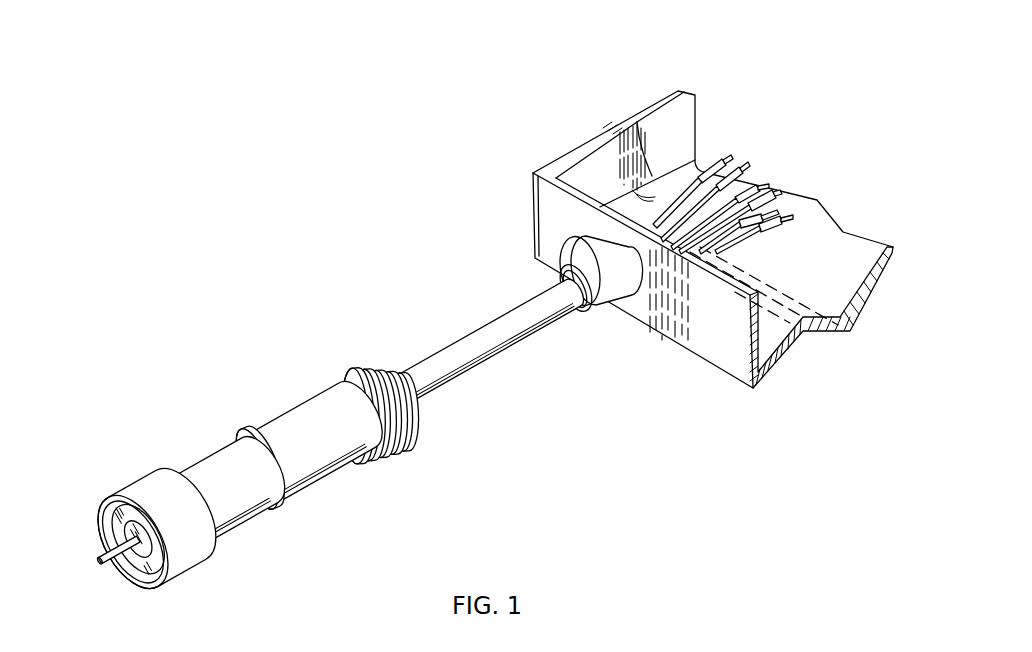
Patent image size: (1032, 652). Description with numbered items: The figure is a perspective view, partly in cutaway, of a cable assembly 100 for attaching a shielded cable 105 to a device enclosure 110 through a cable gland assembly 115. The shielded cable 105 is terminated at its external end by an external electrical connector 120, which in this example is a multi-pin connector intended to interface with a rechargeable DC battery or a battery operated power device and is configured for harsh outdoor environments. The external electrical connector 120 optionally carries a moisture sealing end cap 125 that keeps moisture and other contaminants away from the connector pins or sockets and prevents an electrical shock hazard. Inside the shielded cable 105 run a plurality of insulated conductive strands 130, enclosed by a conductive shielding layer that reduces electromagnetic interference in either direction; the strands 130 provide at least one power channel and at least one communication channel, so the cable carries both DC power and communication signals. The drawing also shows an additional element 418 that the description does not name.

The cable assembly 100 is at (477, 324).
The shielded cable 105 is at (463, 333).
The device enclosure 110 is at (533, 186).
The cable gland assembly 115 is at (562, 272).
The external electrical connector 120 is at (292, 407).
The moisture sealing end cap 125 is at (130, 490).
The insulated conductive strands 130 is at (637, 122).
The pin contact 418 is at (730, 158).